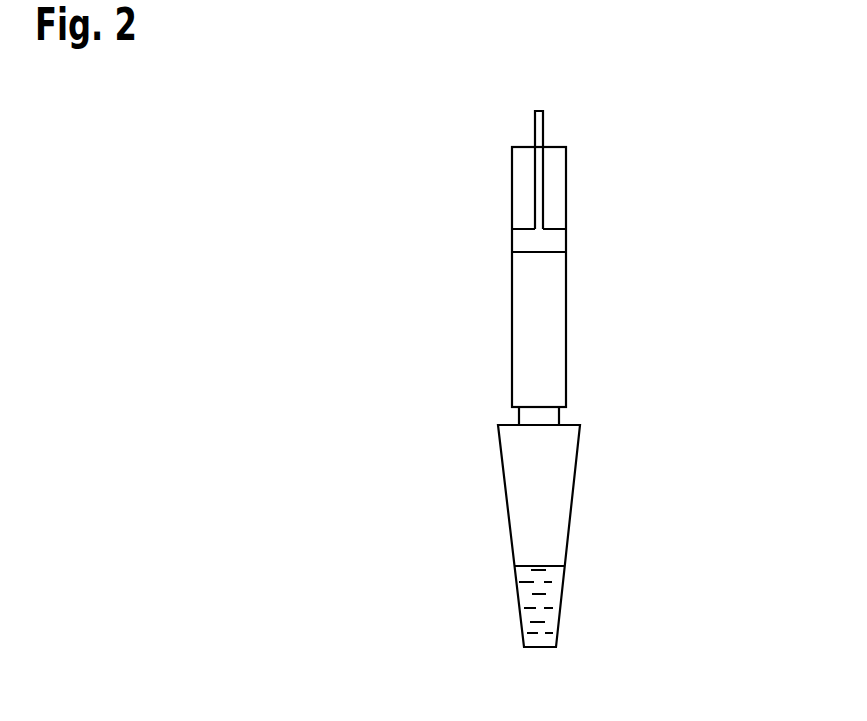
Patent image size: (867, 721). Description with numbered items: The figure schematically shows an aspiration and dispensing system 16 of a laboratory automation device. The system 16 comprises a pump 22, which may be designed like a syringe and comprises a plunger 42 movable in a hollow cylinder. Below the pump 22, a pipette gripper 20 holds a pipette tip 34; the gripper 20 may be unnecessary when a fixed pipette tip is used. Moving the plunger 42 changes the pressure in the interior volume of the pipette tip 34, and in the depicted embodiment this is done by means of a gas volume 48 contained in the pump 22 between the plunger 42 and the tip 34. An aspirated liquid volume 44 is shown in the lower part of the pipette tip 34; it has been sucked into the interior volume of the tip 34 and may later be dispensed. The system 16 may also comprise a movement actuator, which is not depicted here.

The aspiration and dispensing system 16 is at (699, 128).
The pump 22 is at (566, 310).
The plunger 42 is at (532, 239).
The gas volume 48 is at (532, 360).
The pipette gripper 20 is at (560, 417).
The pipette tip 34 is at (537, 510).
The aspirated liquid volume 44 is at (540, 591).